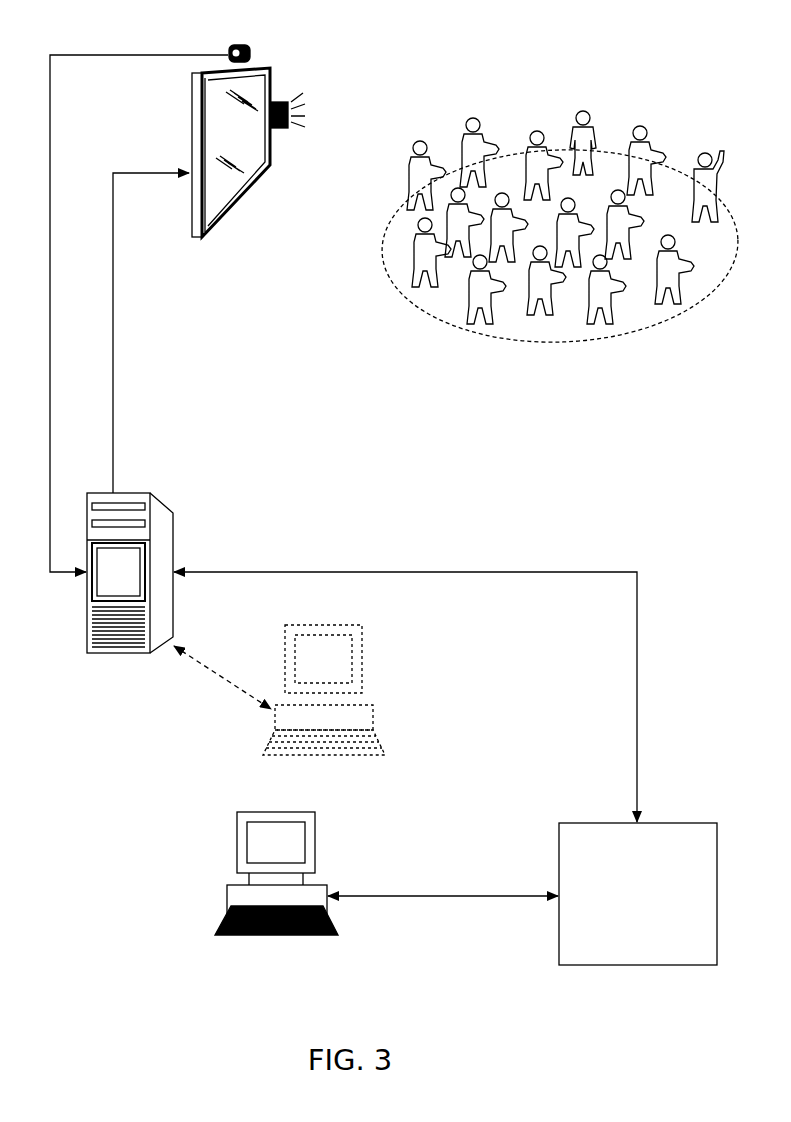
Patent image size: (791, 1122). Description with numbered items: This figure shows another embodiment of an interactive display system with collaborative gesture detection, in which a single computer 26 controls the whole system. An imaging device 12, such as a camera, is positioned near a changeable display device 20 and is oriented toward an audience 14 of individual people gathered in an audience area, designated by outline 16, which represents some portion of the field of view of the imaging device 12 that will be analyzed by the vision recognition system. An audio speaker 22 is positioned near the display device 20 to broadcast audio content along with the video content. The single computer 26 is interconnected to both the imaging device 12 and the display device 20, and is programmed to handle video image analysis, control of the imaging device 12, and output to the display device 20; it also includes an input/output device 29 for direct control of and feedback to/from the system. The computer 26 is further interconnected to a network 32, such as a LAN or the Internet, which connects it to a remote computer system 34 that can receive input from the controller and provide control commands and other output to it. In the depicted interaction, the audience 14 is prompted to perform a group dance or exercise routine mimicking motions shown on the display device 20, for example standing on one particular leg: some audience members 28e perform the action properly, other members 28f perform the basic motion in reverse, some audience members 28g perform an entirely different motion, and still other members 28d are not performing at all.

The imaging device 12 is at (232, 46).
The audience 14 is at (518, 248).
The audience area 16 is at (656, 326).
The display device 20 is at (222, 142).
The audio speaker 22 is at (290, 101).
The single computer 26 is at (160, 533).
The audience members 28d is at (579, 108).
The audience members 28e is at (416, 173).
The audience members 28f is at (413, 252).
The audience members 28g is at (706, 150).
The input/output device 29 is at (364, 713).
The network 32 is at (638, 894).
The remote computer system 34 is at (246, 891).